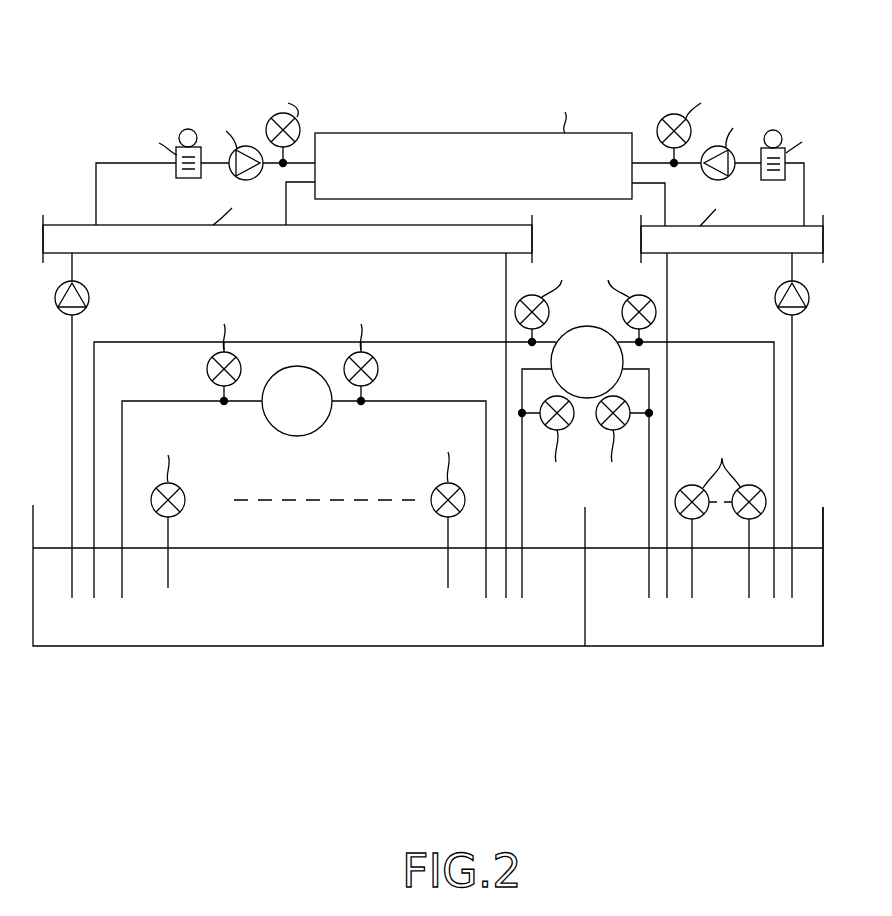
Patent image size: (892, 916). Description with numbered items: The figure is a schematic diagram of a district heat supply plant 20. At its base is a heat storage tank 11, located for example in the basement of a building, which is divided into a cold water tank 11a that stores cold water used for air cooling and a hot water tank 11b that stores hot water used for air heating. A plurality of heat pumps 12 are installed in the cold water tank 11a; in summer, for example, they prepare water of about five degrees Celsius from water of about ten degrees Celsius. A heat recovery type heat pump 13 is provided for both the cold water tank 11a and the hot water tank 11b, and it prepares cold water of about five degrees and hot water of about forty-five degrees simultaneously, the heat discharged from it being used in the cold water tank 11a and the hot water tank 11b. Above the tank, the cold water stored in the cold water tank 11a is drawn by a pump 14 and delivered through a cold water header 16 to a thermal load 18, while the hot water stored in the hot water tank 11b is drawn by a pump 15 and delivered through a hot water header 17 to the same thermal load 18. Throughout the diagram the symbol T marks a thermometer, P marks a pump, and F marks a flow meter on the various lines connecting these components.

The liquid supply system 20 is at (774, 72).
The thermal load 18 is at (433, 133).
The cold water header 16 is at (135, 233).
The hot water header 17 is at (785, 228).
The pump 14 is at (89, 298).
The pump 15 is at (809, 298).
The heat pump 12 is at (322, 426).
The heat recovery type heat pump 13 is at (587, 398).
The heat storage tank 11 is at (407, 646).
The cold water tank 11a is at (238, 646).
The hot water tank 11b is at (768, 646).